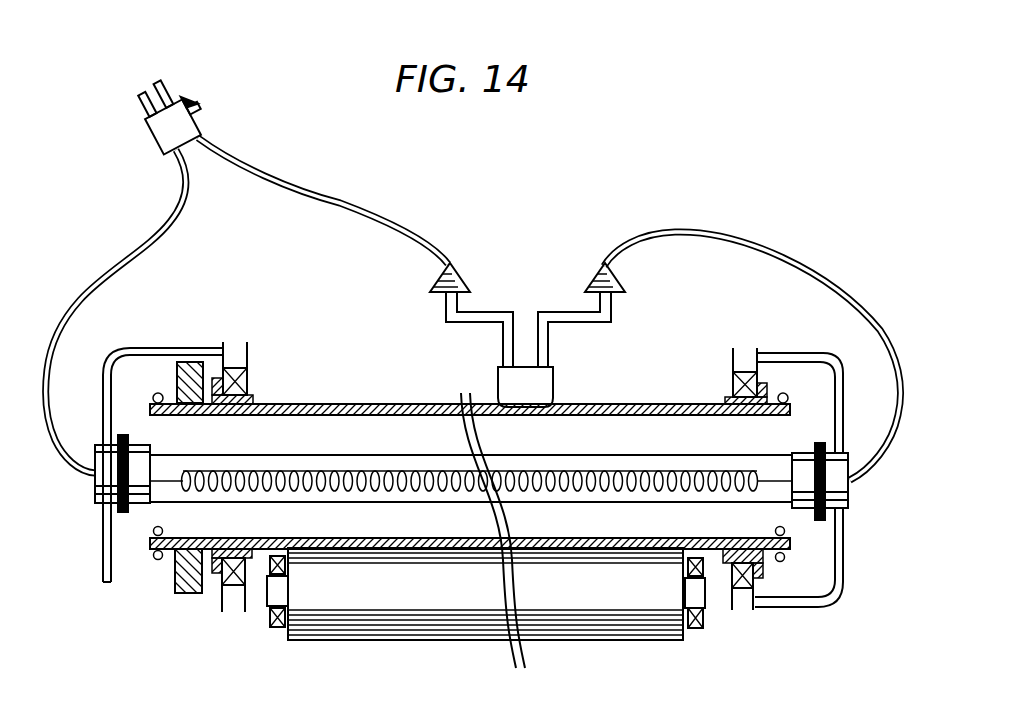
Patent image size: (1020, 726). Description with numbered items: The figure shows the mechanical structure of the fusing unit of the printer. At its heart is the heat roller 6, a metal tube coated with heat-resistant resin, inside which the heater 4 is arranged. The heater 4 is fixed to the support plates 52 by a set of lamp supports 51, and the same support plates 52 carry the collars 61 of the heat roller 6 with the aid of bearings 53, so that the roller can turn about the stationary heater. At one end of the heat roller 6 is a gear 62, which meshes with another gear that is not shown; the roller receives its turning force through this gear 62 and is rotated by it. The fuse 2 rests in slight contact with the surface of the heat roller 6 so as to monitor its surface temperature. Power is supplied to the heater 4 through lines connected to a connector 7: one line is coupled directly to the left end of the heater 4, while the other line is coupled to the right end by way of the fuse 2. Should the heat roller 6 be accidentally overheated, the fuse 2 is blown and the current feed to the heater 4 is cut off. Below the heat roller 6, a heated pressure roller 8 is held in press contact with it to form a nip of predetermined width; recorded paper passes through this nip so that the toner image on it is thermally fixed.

The fuse 2 is at (538, 388).
The heater 4 is at (387, 503).
The heat roller 6 is at (384, 403).
The connector 7 is at (163, 133).
The pressure roller 8 is at (598, 618).
The lamp supports 51 is at (107, 565).
The support plates 52 is at (246, 376).
The bearings 53 is at (248, 386).
The collars 61 is at (255, 401).
The gear 62 is at (190, 583).